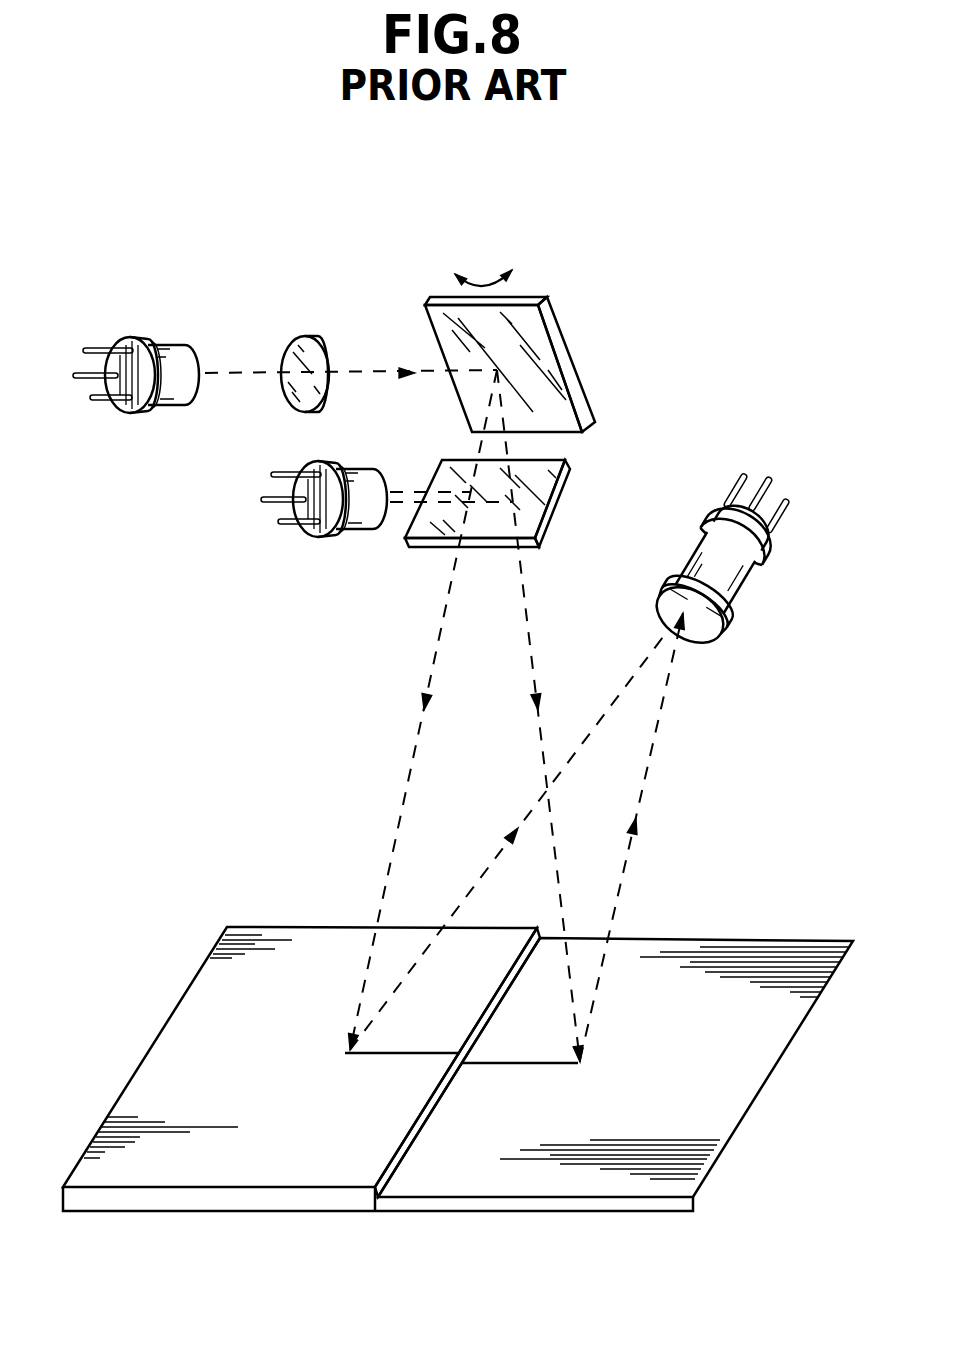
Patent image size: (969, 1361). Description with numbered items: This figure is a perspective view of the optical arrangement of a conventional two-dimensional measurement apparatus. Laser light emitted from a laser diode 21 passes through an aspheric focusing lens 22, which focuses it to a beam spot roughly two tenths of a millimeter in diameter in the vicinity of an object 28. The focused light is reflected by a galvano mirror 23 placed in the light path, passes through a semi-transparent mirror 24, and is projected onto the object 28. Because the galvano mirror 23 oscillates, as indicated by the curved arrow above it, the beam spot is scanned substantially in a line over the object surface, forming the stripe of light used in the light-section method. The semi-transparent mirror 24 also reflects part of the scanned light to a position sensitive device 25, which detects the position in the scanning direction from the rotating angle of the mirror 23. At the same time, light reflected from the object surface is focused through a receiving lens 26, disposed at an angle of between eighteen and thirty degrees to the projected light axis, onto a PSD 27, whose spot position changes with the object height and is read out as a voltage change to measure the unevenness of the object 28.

The laser diode 21 is at (138, 340).
The aspheric focusing lens 22 is at (307, 337).
The galvano mirror 23 is at (563, 333).
The semi-transparent mirror 24 is at (578, 483).
The position sensitive device (PSD) 25 is at (331, 541).
The receiving lens 26 is at (726, 633).
The PSD 27 is at (773, 563).
The object 28 is at (710, 1128).